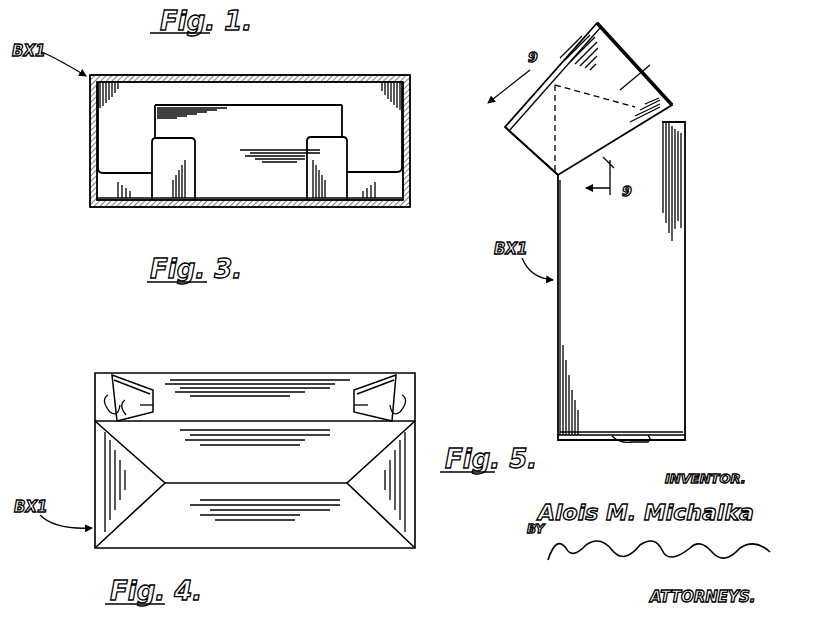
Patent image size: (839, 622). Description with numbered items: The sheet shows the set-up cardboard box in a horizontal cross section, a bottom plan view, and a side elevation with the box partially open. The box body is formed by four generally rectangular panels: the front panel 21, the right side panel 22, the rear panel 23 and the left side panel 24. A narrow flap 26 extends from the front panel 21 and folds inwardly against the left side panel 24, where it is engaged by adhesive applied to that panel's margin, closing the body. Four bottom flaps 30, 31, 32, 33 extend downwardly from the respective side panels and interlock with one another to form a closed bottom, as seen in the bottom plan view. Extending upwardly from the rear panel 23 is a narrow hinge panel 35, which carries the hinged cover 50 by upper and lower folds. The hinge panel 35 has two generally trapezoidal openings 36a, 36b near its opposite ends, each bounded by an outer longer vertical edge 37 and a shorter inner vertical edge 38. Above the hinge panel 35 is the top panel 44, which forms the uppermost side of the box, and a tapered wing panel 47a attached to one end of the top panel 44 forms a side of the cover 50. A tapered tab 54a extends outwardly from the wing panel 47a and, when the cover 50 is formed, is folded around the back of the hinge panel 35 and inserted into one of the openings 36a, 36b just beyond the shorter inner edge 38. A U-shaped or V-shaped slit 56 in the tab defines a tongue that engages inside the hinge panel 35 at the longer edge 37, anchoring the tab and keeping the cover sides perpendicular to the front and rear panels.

In FIG. 3, the front panel 21 is at (212, 200).
In FIG. 5, the front panel 21 is at (688, 355).
In FIG. 3, the right side panel 22 is at (97, 170).
In FIG. 5, the right side panel 22 is at (568, 310).
In FIG. 3, the rear panel 23 is at (221, 81).
In FIG. 5, the rear panel 23 is at (558, 392).
In FIG. 3, the left side panel 24 is at (412, 152).
In FIG. 3, the narrow flap 26 is at (411, 187).
In FIG. 3, the bottom flap 30 is at (268, 190).
In FIG. 4, the bottom flap 30 is at (294, 540).
In FIG. 5, the bottom flap 30 is at (678, 442).
In FIG. 3, the bottom flap 31 is at (343, 188).
In FIG. 4, the bottom flap 31 is at (406, 497).
In FIG. 3, the bottom flap 32 is at (135, 97).
In FIG. 4, the bottom flap 32 is at (274, 460).
In FIG. 5, the bottom flap 32 is at (590, 444).
In FIG. 3, the bottom flap 33 is at (158, 190).
In FIG. 4, the bottom flap 33 is at (96, 450).
In FIG. 4, the hinge panel 35 is at (332, 403).
In FIG. 5, the hinge panel 35 is at (540, 164).
In FIG. 4, the trapezoidal opening 36a is at (366, 413).
In FIG. 4, the trapezoidal opening 36b is at (157, 398).
In FIG. 4, the outer longer vertical edge 37 is at (118, 406).
In FIG. 4, the shorter inner vertical edge 38 is at (155, 397).
In FIG. 5, the top panel 44 is at (557, 65).
In FIG. 5, the tapered wing panel 47a is at (625, 80).
In FIG. 5, the hinged cover 50 is at (634, 54).
In FIG. 4, the tapered tab 54a is at (372, 390).
In FIG. 4, the U-shaped or V-shaped slit 56 is at (116, 390).